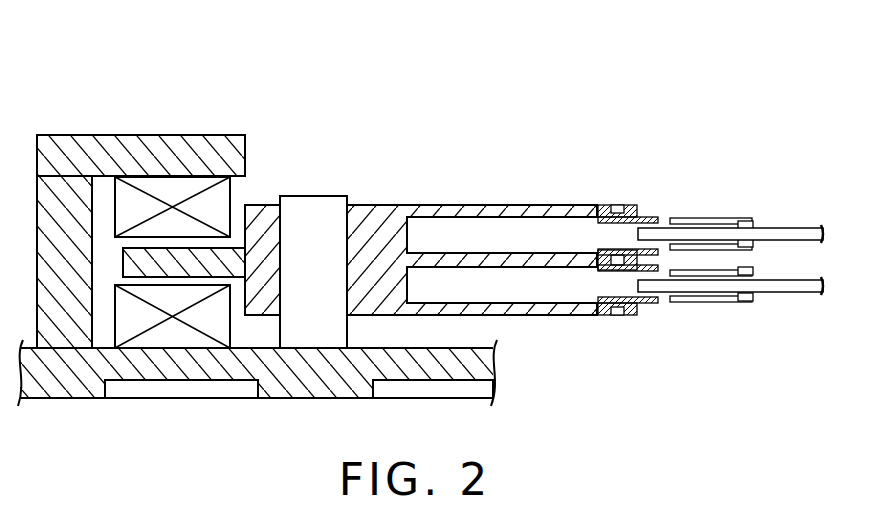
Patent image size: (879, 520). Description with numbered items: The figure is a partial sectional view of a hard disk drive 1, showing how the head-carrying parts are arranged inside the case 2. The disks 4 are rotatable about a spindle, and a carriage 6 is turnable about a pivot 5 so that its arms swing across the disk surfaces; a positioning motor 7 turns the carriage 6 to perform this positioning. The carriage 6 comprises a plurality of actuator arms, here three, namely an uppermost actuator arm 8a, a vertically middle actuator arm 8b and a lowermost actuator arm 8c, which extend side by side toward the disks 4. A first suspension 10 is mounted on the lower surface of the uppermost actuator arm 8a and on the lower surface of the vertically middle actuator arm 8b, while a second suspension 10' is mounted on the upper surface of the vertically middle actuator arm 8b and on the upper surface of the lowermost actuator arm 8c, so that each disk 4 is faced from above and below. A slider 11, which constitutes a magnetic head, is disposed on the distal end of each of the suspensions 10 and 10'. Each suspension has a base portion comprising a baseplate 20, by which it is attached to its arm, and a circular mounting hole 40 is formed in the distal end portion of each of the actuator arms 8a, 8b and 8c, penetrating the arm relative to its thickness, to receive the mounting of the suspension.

The disk drive 1 is at (189, 91).
The case 2 is at (80, 399).
The disks 4 is at (805, 228).
The pivot 5 is at (316, 205).
The carriage 6 is at (458, 202).
The positioning motor 7 is at (172, 335).
The uppermost actuator arm 8a is at (557, 205).
The vertically middle actuator arm 8b is at (468, 256).
The lowermost actuator arm 8c is at (565, 317).
The first suspension 10 is at (711, 270).
The second suspension 10' is at (710, 252).
The slider 11 is at (756, 220).
The baseplate 20 is at (646, 217).
The mounting hole 40 is at (617, 205).